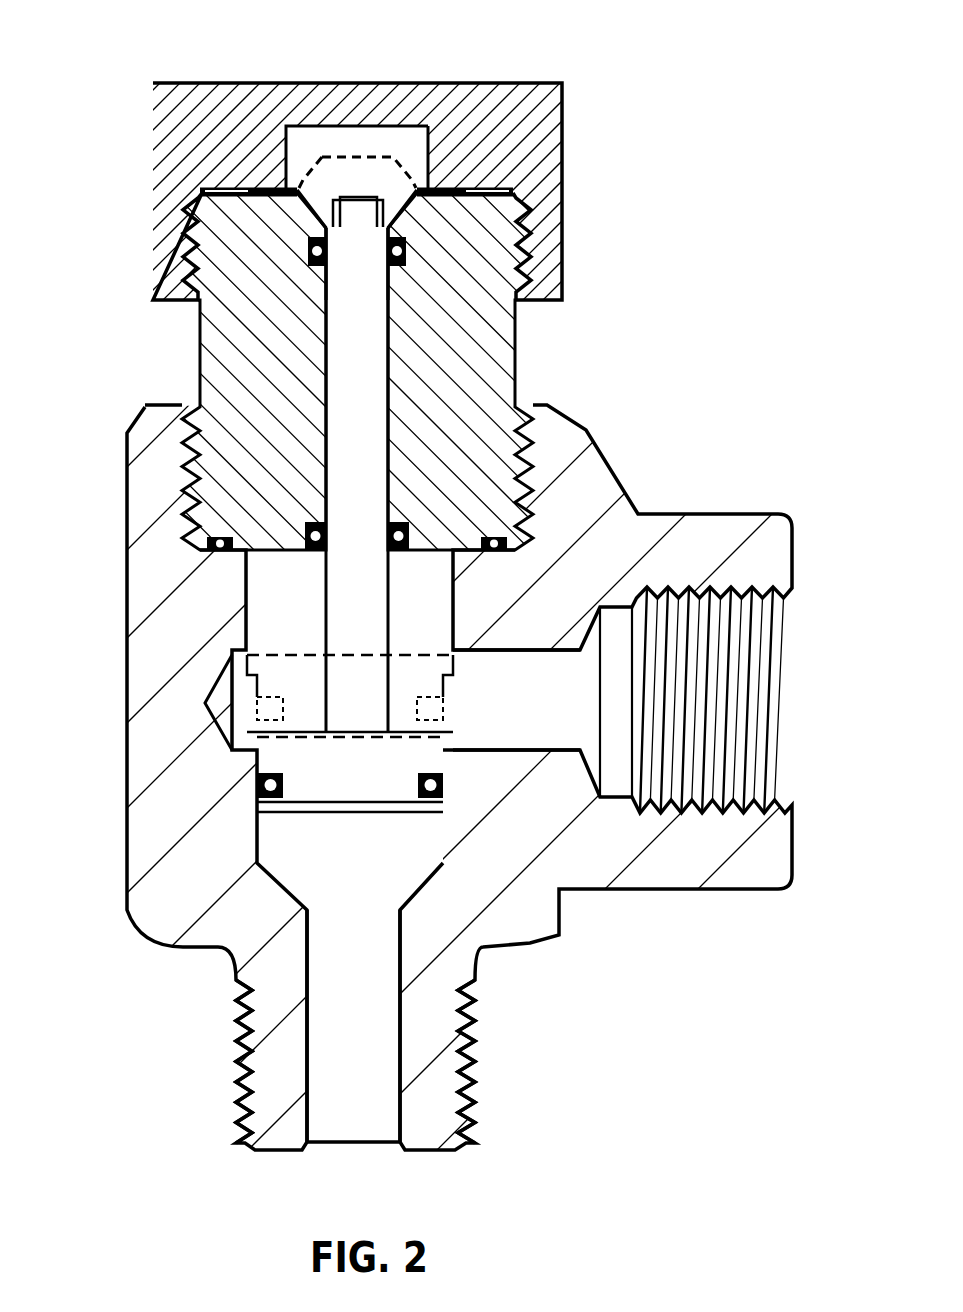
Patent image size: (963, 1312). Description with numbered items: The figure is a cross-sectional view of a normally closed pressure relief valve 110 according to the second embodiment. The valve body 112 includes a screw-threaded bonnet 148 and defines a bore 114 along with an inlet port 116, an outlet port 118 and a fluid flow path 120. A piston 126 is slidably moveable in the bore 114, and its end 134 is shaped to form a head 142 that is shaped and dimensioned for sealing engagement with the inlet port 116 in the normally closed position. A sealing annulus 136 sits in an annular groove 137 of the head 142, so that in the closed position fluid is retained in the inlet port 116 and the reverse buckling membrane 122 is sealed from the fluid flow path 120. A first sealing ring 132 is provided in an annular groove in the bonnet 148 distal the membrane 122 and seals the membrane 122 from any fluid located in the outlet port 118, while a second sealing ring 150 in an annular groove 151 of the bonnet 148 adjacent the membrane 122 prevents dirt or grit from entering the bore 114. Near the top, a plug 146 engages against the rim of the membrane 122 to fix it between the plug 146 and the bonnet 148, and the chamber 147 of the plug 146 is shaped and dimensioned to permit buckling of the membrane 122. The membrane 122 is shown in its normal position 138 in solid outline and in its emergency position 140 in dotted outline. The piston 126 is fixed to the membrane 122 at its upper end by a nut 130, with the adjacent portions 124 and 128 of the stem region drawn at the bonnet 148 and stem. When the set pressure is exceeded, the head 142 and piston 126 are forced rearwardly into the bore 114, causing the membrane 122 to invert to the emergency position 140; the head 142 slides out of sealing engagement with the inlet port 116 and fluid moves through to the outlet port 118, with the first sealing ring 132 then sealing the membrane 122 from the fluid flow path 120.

The pressure relief valve 110 is at (697, 233).
The valve body 112 is at (580, 468).
The bore 114 is at (313, 348).
The inlet port 116 is at (382, 1026).
The outlet port 118 is at (540, 708).
The fluid flow path 120 is at (350, 1067).
The reverse buckling membrane 122 is at (257, 190).
The packing 124 is at (318, 236).
The piston 126 is at (352, 432).
The stem upper portion 128 is at (360, 245).
The nut 130 is at (358, 217).
The first sealing ring 132 is at (305, 530).
The end of the piston 134 is at (357, 700).
The sealing annulus 136 is at (262, 776).
The annular groove 137 is at (258, 790).
The normal position 138 is at (312, 172).
The emergency position 140 is at (430, 188).
The head 142 is at (367, 777).
The plug 146 is at (536, 128).
The chamber 147 is at (350, 140).
The bonnet 148 is at (468, 357).
The second sealing ring 150 is at (312, 257).
The annular groove 151 is at (312, 247).